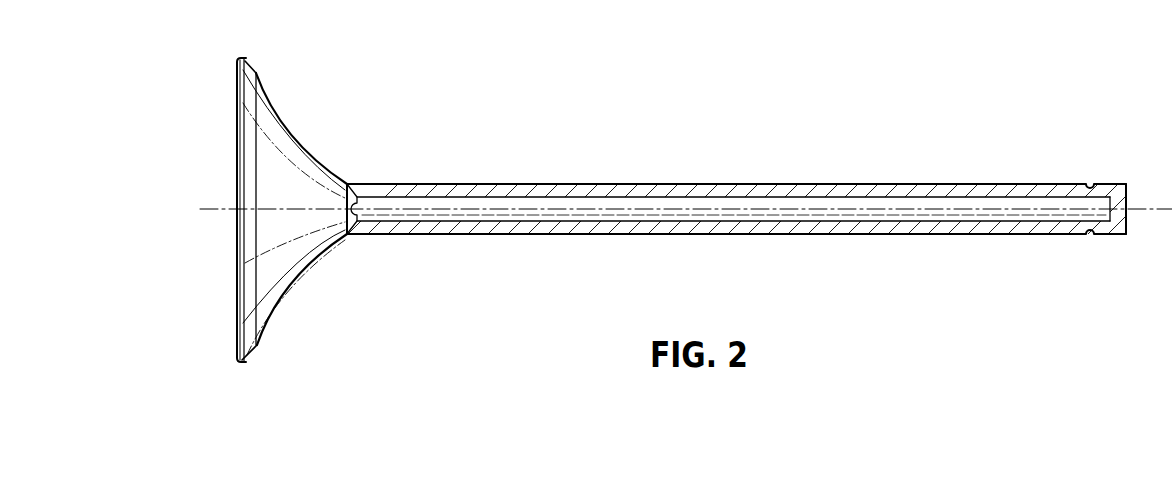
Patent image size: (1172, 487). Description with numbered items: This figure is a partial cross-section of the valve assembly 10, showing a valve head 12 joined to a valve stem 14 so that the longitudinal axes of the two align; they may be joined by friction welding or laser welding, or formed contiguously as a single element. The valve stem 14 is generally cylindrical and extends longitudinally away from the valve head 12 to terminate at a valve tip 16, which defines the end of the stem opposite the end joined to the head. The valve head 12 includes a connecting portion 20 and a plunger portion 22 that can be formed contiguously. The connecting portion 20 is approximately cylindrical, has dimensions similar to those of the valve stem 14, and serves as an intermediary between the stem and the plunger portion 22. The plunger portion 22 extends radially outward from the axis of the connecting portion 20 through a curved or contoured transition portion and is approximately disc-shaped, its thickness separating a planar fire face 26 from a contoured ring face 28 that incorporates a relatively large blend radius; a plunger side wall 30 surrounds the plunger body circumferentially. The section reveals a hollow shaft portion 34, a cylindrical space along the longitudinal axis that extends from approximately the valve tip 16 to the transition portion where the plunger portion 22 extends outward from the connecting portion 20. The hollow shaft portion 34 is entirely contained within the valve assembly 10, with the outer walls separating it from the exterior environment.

The valve assembly 10 is at (821, 101).
The valve head 12 is at (320, 148).
The valve stem 14 is at (919, 180).
The valve tip 16 is at (1113, 183).
The connecting portion 20 is at (367, 183).
The plunger portion 22 is at (283, 123).
The fire face 26 is at (238, 112).
The ring face 28 is at (257, 80).
The plunger side wall 30 is at (247, 58).
The hollow shaft portion 34 is at (992, 197).